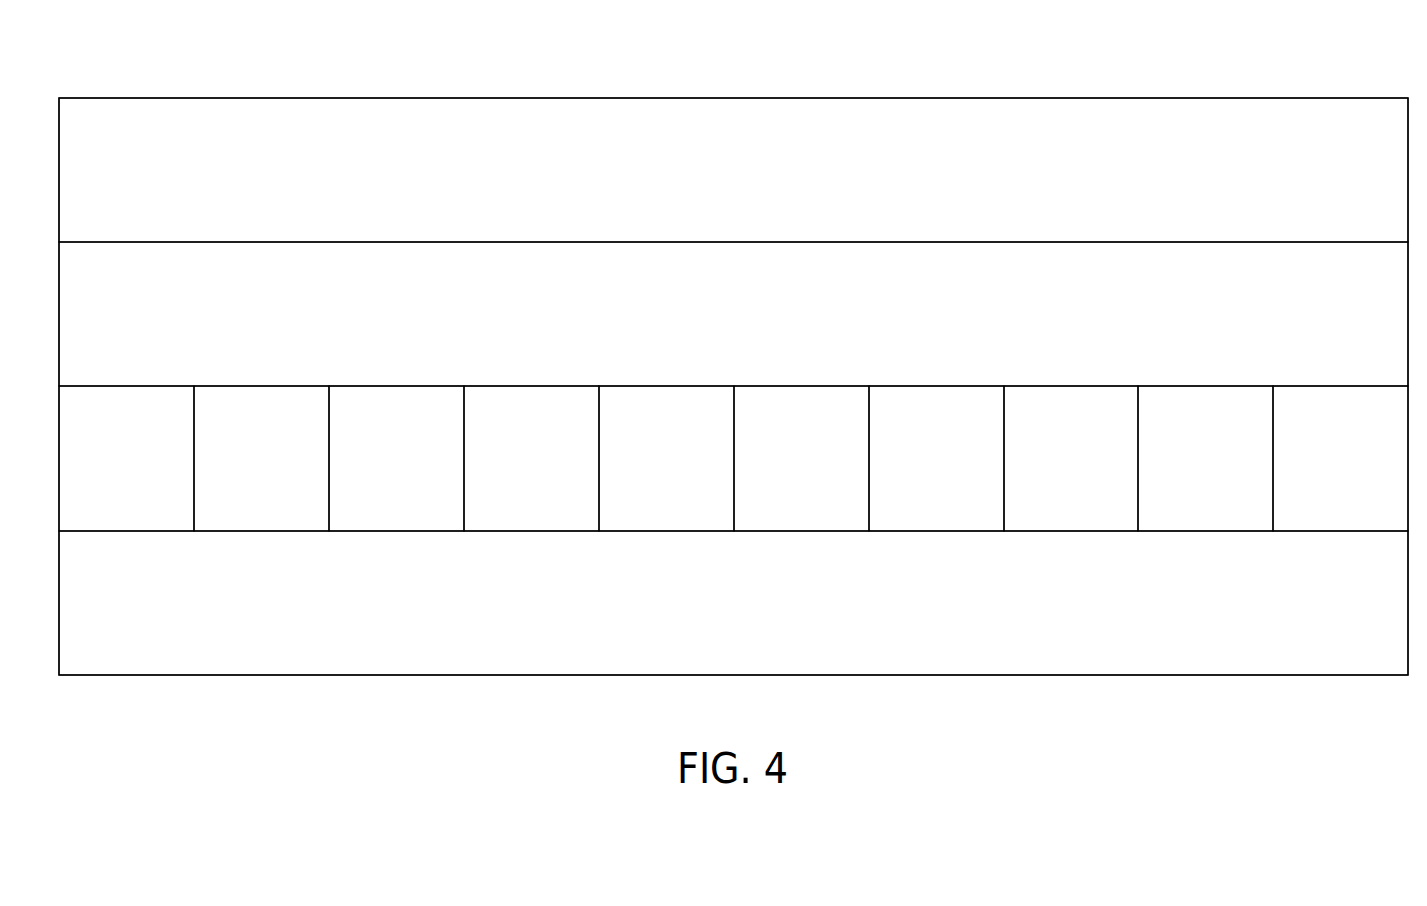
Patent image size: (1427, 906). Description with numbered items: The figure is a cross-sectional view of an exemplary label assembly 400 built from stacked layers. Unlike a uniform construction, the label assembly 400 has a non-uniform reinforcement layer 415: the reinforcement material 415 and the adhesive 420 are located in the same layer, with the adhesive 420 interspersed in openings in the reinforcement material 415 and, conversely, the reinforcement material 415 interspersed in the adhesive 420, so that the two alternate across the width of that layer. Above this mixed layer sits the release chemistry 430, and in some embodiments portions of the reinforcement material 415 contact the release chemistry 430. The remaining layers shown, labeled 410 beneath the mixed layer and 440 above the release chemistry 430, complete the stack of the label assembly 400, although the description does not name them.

The label assembly 400 is at (218, 80).
The bottom layer / substrate 410 is at (733, 603).
The reinforcement material 415 is at (801, 458).
The adhesive 420 is at (666, 458).
The release chemistry 430 is at (733, 314).
The top layer 440 is at (733, 170).